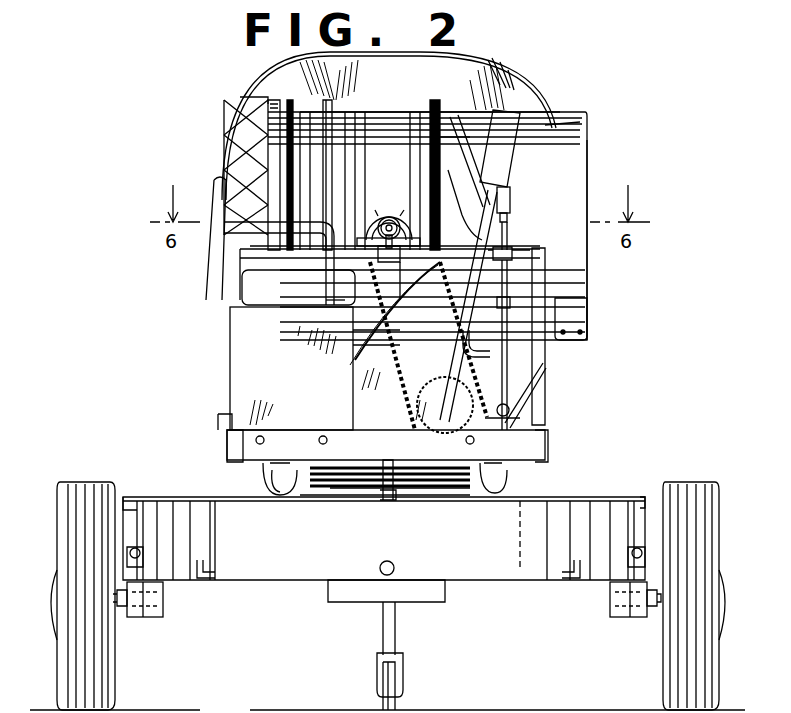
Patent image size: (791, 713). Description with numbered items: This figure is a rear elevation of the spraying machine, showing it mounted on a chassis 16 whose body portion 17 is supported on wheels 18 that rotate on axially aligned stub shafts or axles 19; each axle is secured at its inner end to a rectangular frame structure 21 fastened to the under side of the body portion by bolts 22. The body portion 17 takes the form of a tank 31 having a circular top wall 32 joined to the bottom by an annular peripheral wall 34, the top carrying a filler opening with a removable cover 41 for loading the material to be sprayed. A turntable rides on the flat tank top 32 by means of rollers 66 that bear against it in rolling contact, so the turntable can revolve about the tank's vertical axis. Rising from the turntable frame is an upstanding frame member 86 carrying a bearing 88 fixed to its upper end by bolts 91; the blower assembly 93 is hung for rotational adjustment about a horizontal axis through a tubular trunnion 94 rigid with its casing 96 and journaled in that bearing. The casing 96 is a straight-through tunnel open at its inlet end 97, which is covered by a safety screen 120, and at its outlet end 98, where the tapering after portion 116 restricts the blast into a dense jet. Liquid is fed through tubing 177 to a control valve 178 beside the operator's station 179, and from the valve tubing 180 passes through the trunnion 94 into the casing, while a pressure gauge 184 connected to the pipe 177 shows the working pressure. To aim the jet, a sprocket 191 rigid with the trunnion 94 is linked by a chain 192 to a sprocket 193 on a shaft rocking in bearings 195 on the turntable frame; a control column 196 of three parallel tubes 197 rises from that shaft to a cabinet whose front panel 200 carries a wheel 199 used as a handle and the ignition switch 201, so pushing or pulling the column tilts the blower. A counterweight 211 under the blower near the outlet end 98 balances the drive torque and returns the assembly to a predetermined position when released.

The chassis 16 is at (270, 577).
The body portion 17 is at (419, 631).
The wheels 18 is at (105, 682).
The stub shafts or axles 19 is at (122, 606).
The rectangular frame structure 21 is at (160, 598).
The bolts 22 is at (150, 595).
The tank 31 is at (449, 538).
The top wall 32 is at (193, 497).
The annular peripheral wall 34 is at (311, 544).
The removable cover 41 is at (345, 492).
The rollers 66 is at (265, 488).
The upstanding frame member 86 is at (530, 255).
The bearing 88 is at (374, 230).
The bolts 91 is at (398, 212).
The blower assembly 93 is at (641, 141).
The tubular trunnion 94 is at (378, 208).
The casing 96 is at (374, 120).
The inlet end 97 is at (265, 150).
The outlet end 98 is at (588, 170).
The after portion 116 is at (547, 130).
The safety screen 120 is at (258, 128).
The tubing 177 is at (514, 262).
The control valve 178 is at (470, 235).
The operator's station 179 is at (212, 284).
The tubing 180 is at (328, 300).
The pressure gauge 184 is at (510, 200).
The sprocket 191 is at (389, 206).
The chain 192 is at (540, 368).
The sprocket 193 is at (510, 410).
The bearings 195 is at (460, 425).
The control column 196 is at (518, 112).
The parallel tubes 197 is at (456, 345).
The wheel 199 is at (505, 172).
The front panel 200 is at (490, 135).
The ignition switch 201 is at (440, 137).
The counterweight 211 is at (570, 320).